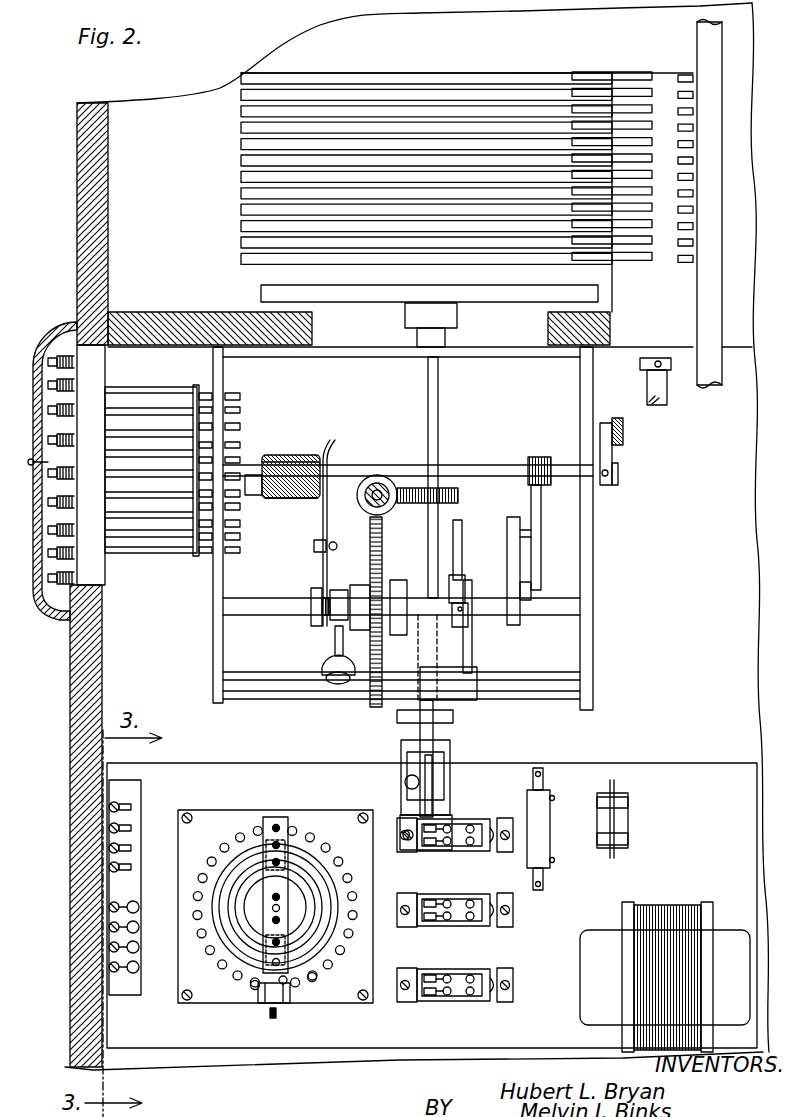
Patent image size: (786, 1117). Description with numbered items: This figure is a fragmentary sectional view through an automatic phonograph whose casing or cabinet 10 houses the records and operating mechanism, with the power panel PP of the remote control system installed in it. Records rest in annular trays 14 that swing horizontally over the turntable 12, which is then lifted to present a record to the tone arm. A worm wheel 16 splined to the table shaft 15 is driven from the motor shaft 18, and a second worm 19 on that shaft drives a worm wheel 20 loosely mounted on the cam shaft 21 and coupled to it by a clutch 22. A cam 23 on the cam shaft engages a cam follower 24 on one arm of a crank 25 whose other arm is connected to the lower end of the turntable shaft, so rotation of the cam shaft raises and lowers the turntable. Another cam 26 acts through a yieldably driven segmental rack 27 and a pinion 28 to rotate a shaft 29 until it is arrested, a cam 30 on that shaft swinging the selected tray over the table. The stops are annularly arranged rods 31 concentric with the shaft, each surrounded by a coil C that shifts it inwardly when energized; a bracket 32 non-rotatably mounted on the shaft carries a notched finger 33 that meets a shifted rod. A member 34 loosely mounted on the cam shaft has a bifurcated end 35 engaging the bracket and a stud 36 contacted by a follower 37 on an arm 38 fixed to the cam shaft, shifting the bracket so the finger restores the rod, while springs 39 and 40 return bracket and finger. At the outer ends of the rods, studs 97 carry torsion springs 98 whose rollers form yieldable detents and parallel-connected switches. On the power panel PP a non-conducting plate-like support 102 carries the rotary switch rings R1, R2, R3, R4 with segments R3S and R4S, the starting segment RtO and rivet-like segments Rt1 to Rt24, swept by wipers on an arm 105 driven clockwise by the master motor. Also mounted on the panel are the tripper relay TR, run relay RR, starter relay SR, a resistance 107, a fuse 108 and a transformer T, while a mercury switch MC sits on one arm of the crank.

The casing or cabinet 10 is at (108, 178).
The turntable 12 is at (598, 296).
The annular trays 14 is at (333, 90).
The table shaft 15 is at (438, 410).
The worm wheel 16 is at (458, 496).
The motor shaft 18 is at (373, 505).
The second worm 19 is at (378, 478).
The worm wheel 20 is at (383, 548).
The cam shaft 21 is at (554, 614).
The clutch 22 is at (403, 628).
The cam 23 is at (462, 535).
The cam follower 24 is at (462, 576).
The crank 25 is at (477, 700).
The cam 26 is at (513, 568).
The segmental rack 27 is at (541, 513).
The pinion 28 is at (540, 459).
The shaft 29 is at (485, 467).
The cam 30 is at (612, 453).
The rods 31 is at (243, 440).
The bracket 32 is at (290, 458).
The finger 33 is at (254, 496).
The member 34 is at (323, 528).
The bifurcated end 35 is at (330, 456).
The stud 36 is at (335, 544).
The follower 37 is at (330, 663).
The rod 38 is at (334, 638).
The spring 39 is at (306, 461).
The spring 40 is at (289, 499).
The studs 97 is at (40, 362).
The torsion spring 98 is at (62, 345).
The plate-like support 102 is at (208, 818).
The arm 105 is at (277, 822).
The resistance 107 is at (548, 833).
The fuse 108 is at (603, 822).
The coils C is at (125, 538).
The power panel PP is at (367, 1048).
The mercury switch MC is at (405, 783).
The starter relay SR is at (486, 808).
The tripper relay TR is at (496, 932).
The run relay RR is at (518, 993).
The transformer T is at (664, 898).
The ring R1 is at (245, 905).
The ring R2 is at (233, 928).
The ring R3 is at (308, 862).
The segment R3S is at (305, 863).
The ring R4 is at (250, 850).
The segment R4S is at (283, 985).
The rivet-like segment Rt1 is at (254, 990).
The starting segment RtO is at (258, 992).
The rivet-like segment Rt24 is at (315, 982).